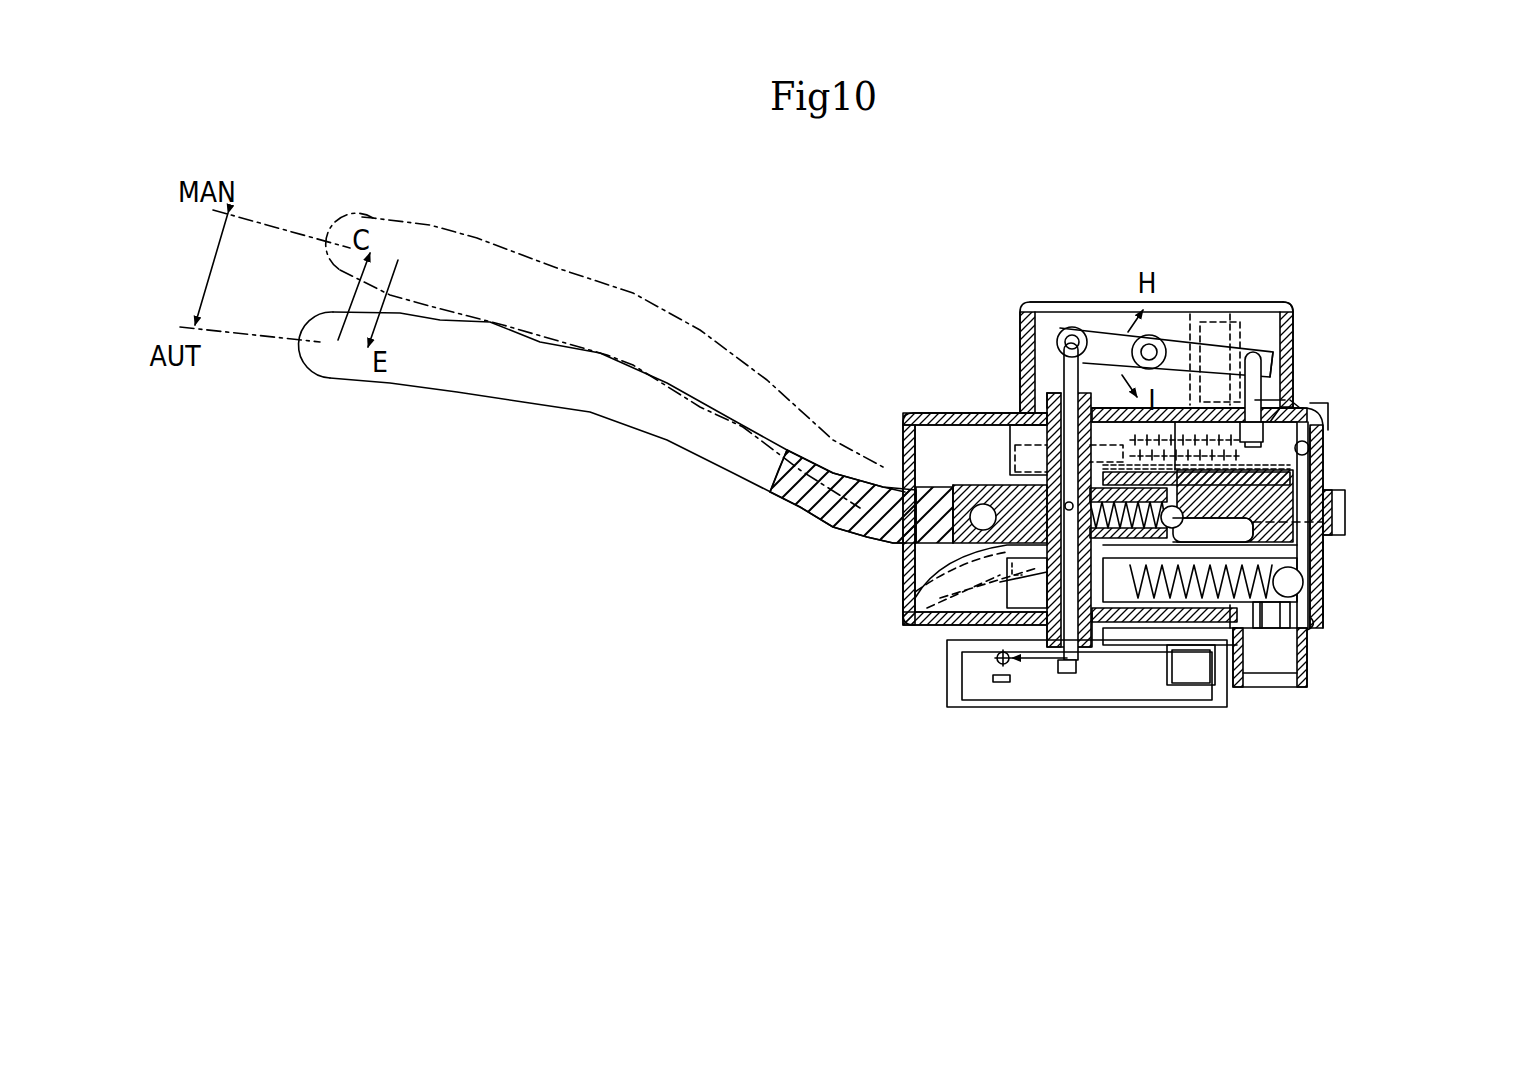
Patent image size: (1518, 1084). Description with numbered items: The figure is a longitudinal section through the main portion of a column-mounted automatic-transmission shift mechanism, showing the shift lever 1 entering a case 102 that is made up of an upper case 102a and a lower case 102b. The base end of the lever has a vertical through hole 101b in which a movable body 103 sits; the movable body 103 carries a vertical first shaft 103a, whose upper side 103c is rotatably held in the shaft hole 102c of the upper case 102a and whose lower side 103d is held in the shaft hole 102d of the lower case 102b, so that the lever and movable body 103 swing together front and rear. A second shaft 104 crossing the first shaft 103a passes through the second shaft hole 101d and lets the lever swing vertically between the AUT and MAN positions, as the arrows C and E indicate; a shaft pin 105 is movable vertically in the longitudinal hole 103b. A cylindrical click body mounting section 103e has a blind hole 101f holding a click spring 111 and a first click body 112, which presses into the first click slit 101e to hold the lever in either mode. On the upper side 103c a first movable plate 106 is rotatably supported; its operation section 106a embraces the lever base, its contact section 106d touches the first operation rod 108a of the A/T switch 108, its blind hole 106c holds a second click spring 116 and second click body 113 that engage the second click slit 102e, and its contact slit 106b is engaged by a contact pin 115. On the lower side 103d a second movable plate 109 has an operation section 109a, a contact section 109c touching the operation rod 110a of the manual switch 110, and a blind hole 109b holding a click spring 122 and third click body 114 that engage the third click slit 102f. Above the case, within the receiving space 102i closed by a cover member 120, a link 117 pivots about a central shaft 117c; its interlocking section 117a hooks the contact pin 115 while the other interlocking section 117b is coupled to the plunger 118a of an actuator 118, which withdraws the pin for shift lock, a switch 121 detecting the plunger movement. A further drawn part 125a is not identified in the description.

The shift lever 1 is at (628, 355).
The through hole 101b is at (900, 455).
The second shaft hole 101d is at (990, 480).
The first click slit 101e is at (1175, 410).
The blind hole 101f is at (1125, 560).
The case 102 is at (920, 387).
The upper case 102a is at (910, 413).
The lower case 102b is at (900, 564).
The shaft hole 102c is at (1105, 410).
The shaft hole 102d is at (1060, 640).
The second click slit 102e is at (1328, 420).
The third click slit 102f is at (1323, 562).
The receiving space 102i is at (1278, 308).
The movable body 103 is at (1047, 480).
The first shaft 103a is at (1050, 410).
The longitudinal hole 103b is at (900, 625).
The upper side 103c is at (1042, 395).
The lower side 103d is at (990, 672).
The click body mounting section 103e is at (1177, 600).
The second shaft 104 is at (903, 575).
The shaft pin 105 is at (903, 599).
The first movable plate 106 is at (1112, 425).
The operation section 106a is at (1349, 505).
The contact slit 106b is at (1293, 405).
The blind hole 106c is at (1310, 447).
The contact section 106d is at (1200, 400).
The A/T switch 108 is at (1215, 400).
The first operation rod 108a is at (1250, 360).
The second movable plate 109 is at (1178, 530).
The operation section 109a is at (1345, 522).
The blind hole 109b is at (1230, 615).
The contact section 109c is at (1307, 607).
The manual switch 110 is at (1287, 647).
The operation rod 110a is at (1310, 617).
The click spring 111 is at (1088, 648).
The first click body 112 is at (1165, 600).
The second click body 113 is at (1297, 457).
The third click body 114 is at (1295, 585).
The contact pin 115 is at (1280, 400).
The second click spring 116 is at (1280, 410).
The link 117 is at (1100, 335).
The interlocking section 117a is at (1262, 345).
The interlocking section 117b is at (1060, 330).
The central shaft 117c is at (1155, 337).
The actuator 118 is at (923, 612).
The plunger 118a is at (1030, 420).
The cover member 120 is at (1294, 308).
The switch 121 is at (987, 669).
The click spring 122 is at (1260, 612).
The connector 125a is at (1217, 705).